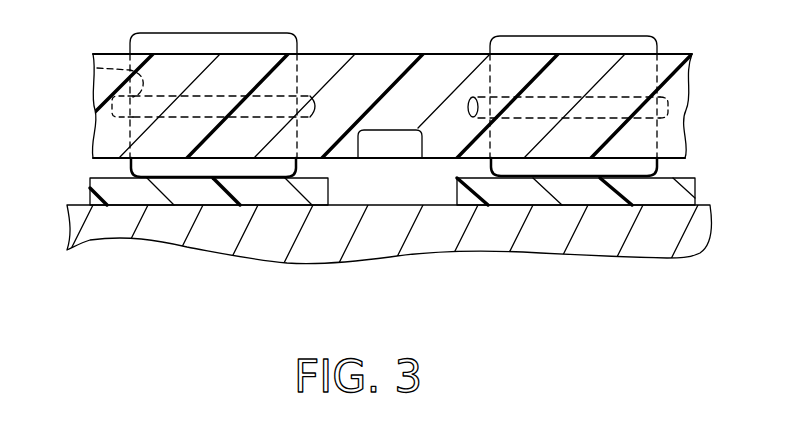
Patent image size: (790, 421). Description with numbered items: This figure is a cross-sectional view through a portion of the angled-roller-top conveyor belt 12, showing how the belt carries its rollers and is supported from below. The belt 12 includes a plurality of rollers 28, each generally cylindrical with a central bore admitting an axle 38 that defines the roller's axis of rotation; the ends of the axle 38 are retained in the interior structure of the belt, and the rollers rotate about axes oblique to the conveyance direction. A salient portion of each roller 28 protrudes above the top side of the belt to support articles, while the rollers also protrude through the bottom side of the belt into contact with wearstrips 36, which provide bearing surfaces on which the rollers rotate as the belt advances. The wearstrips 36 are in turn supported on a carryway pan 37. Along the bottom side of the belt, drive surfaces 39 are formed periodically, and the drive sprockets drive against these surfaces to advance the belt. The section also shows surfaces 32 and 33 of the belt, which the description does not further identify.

The conveyor belt 12 is at (110, 122).
The roller 28 is at (592, 40).
The top surface of substrate 32 is at (400, 53).
The bottom surface of substrate 33 is at (671, 160).
The wearstrip 36 is at (90, 179).
The carryway pan 37 is at (655, 250).
The axle 38 is at (97, 68).
The drive surface 39 is at (393, 150).